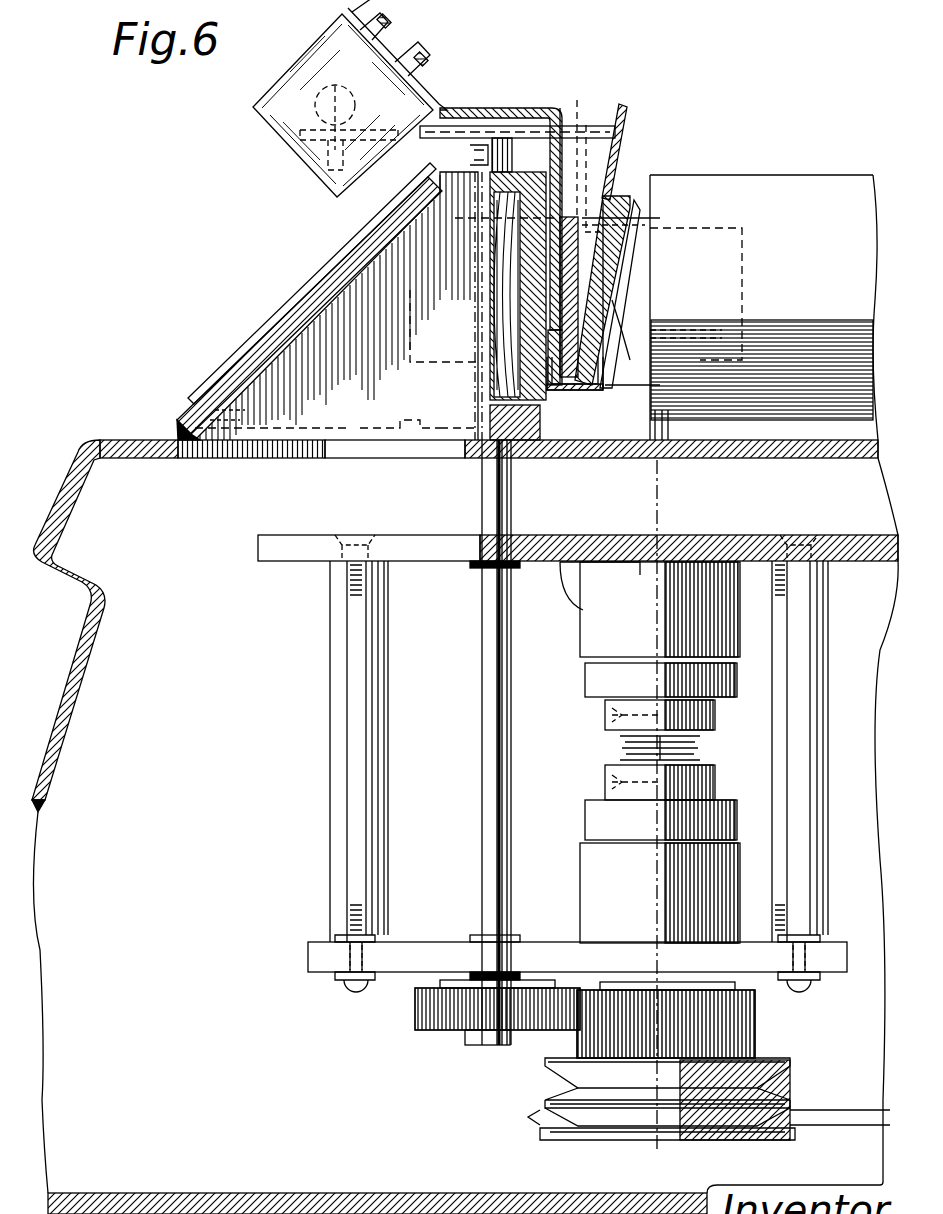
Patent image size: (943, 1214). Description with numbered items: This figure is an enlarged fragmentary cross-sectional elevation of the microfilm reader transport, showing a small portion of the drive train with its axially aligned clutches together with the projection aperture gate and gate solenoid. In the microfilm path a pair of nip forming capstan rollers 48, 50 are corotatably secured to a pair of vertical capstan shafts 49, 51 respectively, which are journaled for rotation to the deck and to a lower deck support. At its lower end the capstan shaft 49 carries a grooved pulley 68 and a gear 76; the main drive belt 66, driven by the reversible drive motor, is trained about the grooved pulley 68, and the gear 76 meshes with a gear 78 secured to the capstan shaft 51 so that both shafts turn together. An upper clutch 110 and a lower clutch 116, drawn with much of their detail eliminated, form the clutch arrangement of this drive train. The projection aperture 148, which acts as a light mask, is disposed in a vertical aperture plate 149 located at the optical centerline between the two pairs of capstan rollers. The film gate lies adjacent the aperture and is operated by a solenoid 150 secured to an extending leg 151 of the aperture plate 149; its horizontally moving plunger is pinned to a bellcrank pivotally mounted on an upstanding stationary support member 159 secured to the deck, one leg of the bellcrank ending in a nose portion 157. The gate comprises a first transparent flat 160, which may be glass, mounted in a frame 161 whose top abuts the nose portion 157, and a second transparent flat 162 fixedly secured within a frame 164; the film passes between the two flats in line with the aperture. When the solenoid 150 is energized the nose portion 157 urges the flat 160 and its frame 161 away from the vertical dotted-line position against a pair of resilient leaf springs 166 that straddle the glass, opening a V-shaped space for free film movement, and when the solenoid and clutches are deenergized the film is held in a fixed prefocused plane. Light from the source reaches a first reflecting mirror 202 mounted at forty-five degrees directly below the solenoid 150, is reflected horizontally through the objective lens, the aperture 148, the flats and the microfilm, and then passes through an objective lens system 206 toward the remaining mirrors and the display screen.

The capstan roller 48 is at (718, 232).
The capstan shaft 49 is at (420, 535).
The capstan roller 50 is at (408, 350).
The capstan shaft 51 is at (485, 653).
The main drive belt 66 is at (828, 1110).
The grooved pulley 68 is at (548, 1118).
The gear 76 is at (752, 1018).
The gear 78 is at (415, 1008).
The upper clutch 110 is at (582, 608).
The lower clutch 116 is at (582, 868).
The projection aperture 148 is at (553, 335).
The aperture plate 149 is at (555, 118).
The solenoid 150 is at (252, 108).
The extending leg 151 is at (468, 108).
The nose portion 157 is at (624, 118).
The stationary support member 159 is at (488, 152).
The first transparent flat 160 is at (628, 182).
The frame 161 is at (620, 152).
The second transparent flat 162 is at (578, 195).
The frame 164 is at (582, 390).
The leaf springs 166 is at (610, 318).
The first reflecting mirror 202 is at (300, 315).
The objective lens system 206 is at (808, 185).